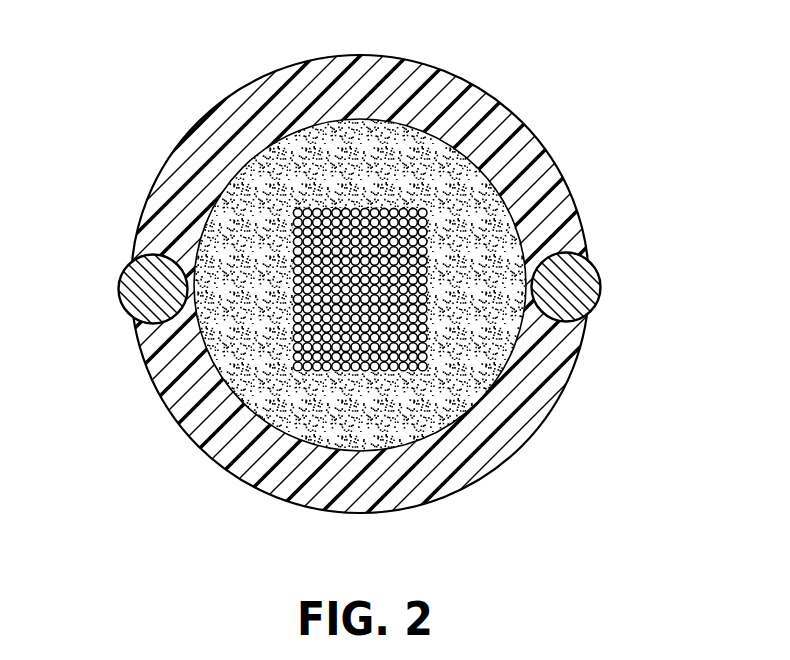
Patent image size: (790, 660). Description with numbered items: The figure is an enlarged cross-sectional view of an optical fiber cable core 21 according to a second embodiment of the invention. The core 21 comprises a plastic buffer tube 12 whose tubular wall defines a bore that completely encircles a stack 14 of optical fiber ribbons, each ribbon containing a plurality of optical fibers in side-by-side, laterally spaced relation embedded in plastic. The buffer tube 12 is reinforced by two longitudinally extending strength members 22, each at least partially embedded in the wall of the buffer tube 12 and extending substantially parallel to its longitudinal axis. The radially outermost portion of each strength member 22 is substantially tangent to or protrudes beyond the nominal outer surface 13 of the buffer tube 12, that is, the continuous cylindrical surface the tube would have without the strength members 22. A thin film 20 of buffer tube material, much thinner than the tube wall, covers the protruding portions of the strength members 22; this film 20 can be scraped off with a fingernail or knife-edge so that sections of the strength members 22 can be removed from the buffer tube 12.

The buffer tube 12 is at (246, 131).
The outer surface 13 is at (183, 143).
The stack 14 is at (455, 207).
The thin film 20 is at (366, 296).
The core 21 is at (395, 330).
The strength members 22 is at (174, 292).